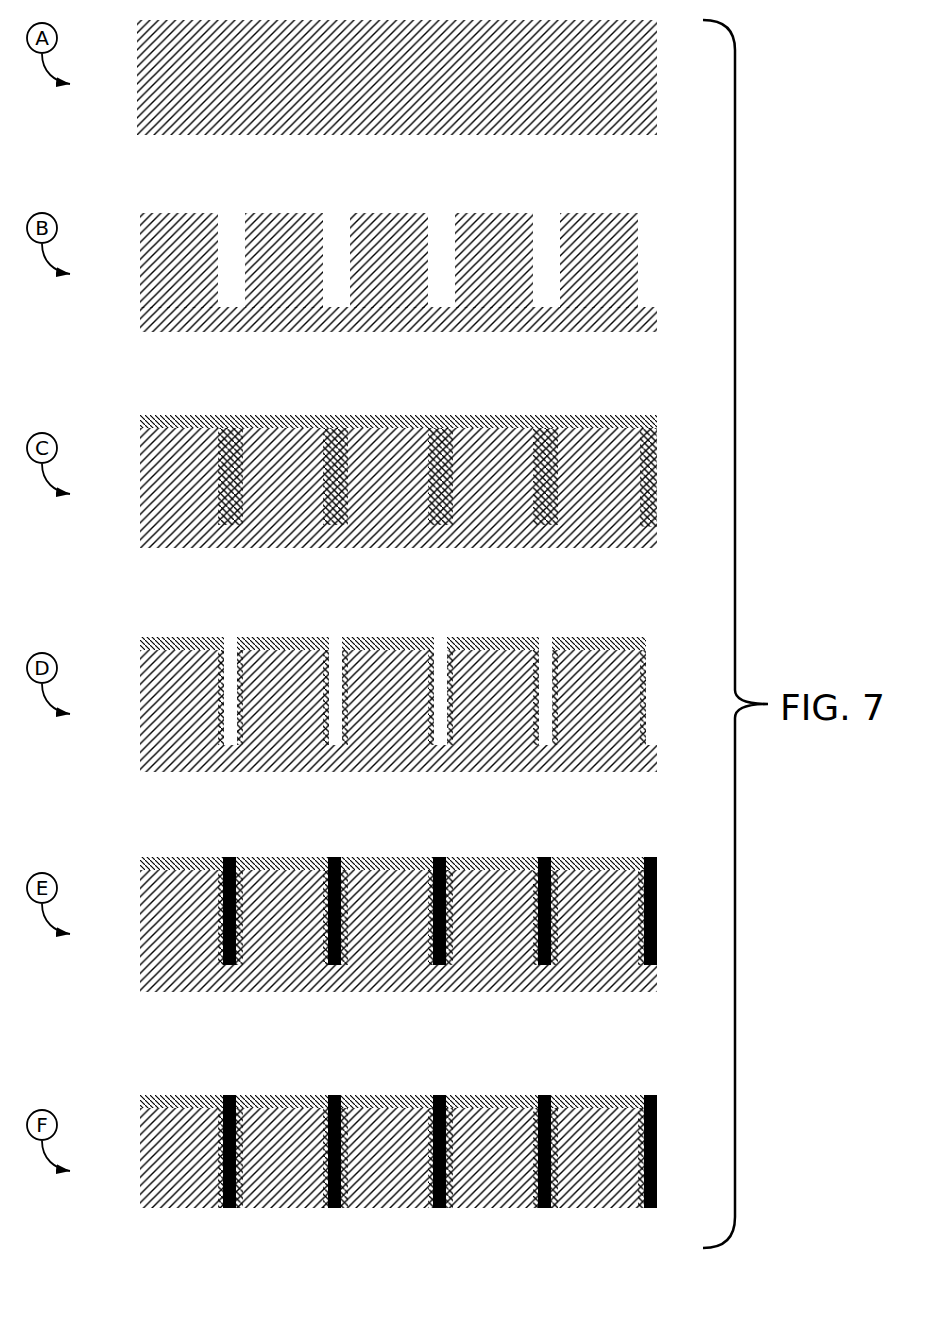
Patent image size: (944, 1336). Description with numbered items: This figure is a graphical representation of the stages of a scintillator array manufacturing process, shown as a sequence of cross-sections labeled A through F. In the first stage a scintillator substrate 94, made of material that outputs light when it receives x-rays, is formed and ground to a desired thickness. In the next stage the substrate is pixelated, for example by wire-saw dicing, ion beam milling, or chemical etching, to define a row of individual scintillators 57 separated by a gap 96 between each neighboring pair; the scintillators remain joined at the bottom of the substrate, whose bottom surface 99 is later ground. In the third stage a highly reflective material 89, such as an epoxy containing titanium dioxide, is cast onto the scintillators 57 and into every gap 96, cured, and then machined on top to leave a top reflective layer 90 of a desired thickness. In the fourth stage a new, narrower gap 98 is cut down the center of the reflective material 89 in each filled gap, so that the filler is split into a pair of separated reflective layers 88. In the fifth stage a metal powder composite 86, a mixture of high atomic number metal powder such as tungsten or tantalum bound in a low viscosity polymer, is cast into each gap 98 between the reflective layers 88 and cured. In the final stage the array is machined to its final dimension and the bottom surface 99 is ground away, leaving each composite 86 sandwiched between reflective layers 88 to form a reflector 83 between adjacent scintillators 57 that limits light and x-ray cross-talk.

The scintillator substrate 94 is at (385, 84).
The scintillator 57 is at (613, 1173).
The bottom surface 99 is at (163, 322).
The gap 96 is at (416, 379).
The top reflective layer 90 is at (650, 420).
The highly reflective material 89 is at (468, 794).
The gap 98 is at (441, 641).
The reflective layer 88 is at (405, 870).
The metal powder composite 86 is at (440, 1018).
The reflector 83 is at (440, 1065).